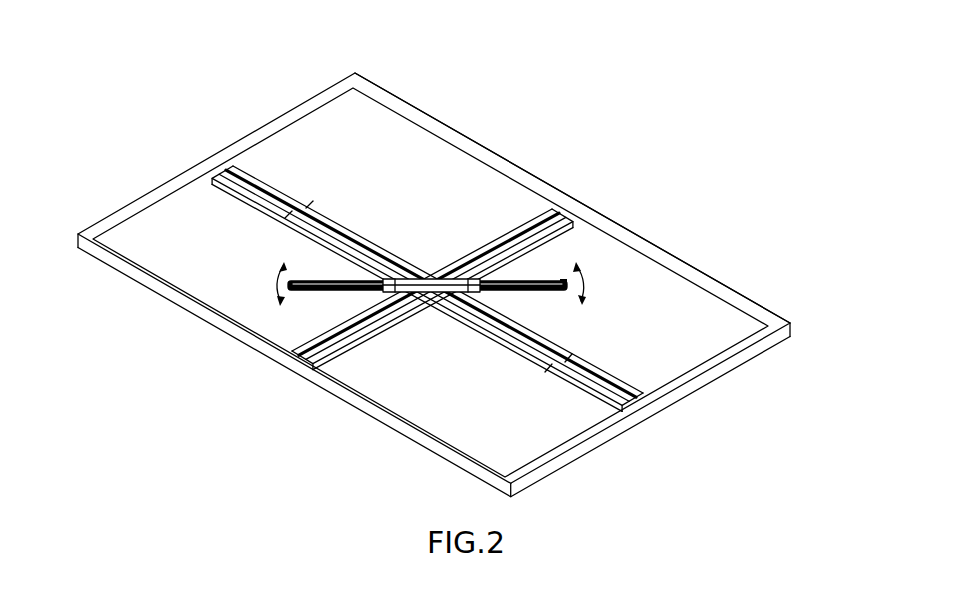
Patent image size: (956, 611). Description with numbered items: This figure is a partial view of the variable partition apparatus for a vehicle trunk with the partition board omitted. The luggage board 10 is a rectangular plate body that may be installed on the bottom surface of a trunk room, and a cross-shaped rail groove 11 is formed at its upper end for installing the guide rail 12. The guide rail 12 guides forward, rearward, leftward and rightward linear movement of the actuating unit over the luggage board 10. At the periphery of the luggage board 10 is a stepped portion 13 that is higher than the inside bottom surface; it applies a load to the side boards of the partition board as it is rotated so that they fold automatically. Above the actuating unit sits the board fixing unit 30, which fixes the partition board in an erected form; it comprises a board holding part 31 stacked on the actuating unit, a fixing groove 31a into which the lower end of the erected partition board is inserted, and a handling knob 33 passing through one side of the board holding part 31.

The luggage board 10 is at (426, 108).
The rail groove 11 is at (318, 228).
The guide rail 12 is at (493, 238).
The stepped portion 13 is at (702, 290).
The board fixing unit 30 is at (462, 267).
The board holding part 31 is at (550, 278).
The fixing groove 31a is at (568, 288).
The handling knob 33 is at (425, 292).